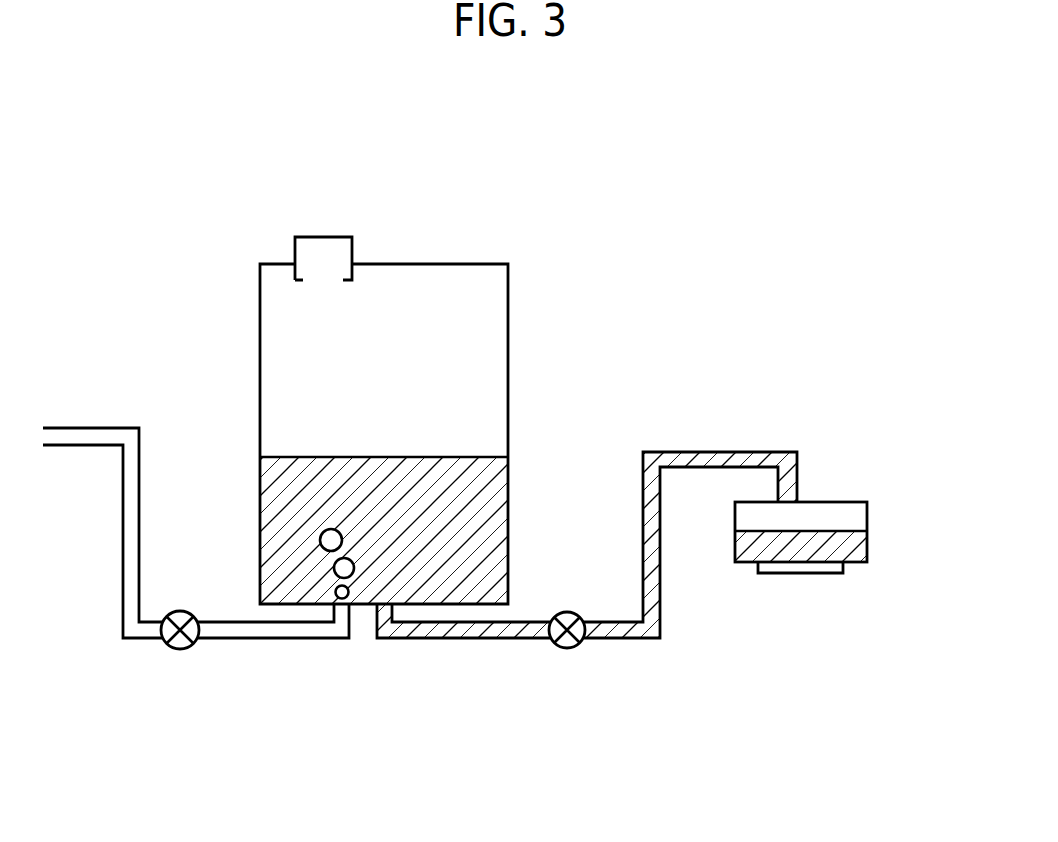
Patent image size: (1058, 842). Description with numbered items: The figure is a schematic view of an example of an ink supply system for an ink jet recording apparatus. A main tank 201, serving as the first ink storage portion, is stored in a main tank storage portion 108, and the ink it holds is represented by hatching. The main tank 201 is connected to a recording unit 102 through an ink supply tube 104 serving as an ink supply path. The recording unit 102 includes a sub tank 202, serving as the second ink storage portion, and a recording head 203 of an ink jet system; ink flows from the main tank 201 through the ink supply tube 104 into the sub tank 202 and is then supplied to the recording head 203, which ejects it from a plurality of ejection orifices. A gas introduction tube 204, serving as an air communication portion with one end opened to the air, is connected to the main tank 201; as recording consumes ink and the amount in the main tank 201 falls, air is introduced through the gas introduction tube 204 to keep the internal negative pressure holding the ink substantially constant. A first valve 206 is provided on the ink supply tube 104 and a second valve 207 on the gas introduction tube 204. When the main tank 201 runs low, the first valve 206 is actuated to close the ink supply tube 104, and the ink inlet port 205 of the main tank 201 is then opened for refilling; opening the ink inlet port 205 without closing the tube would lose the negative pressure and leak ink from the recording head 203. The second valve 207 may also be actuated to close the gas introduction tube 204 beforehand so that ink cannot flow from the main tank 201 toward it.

The main tank storage portion 108 is at (253, 188).
The main tank 201 is at (465, 292).
The ink inlet port 205 is at (332, 237).
The gas introduction tube 204 is at (88, 428).
The second valve 207 is at (180, 652).
The ink supply tube 104 is at (705, 450).
The first valve 206 is at (567, 648).
The recording unit 102 is at (893, 500).
The sub tank 202 is at (853, 513).
The recording head 203 is at (805, 571).